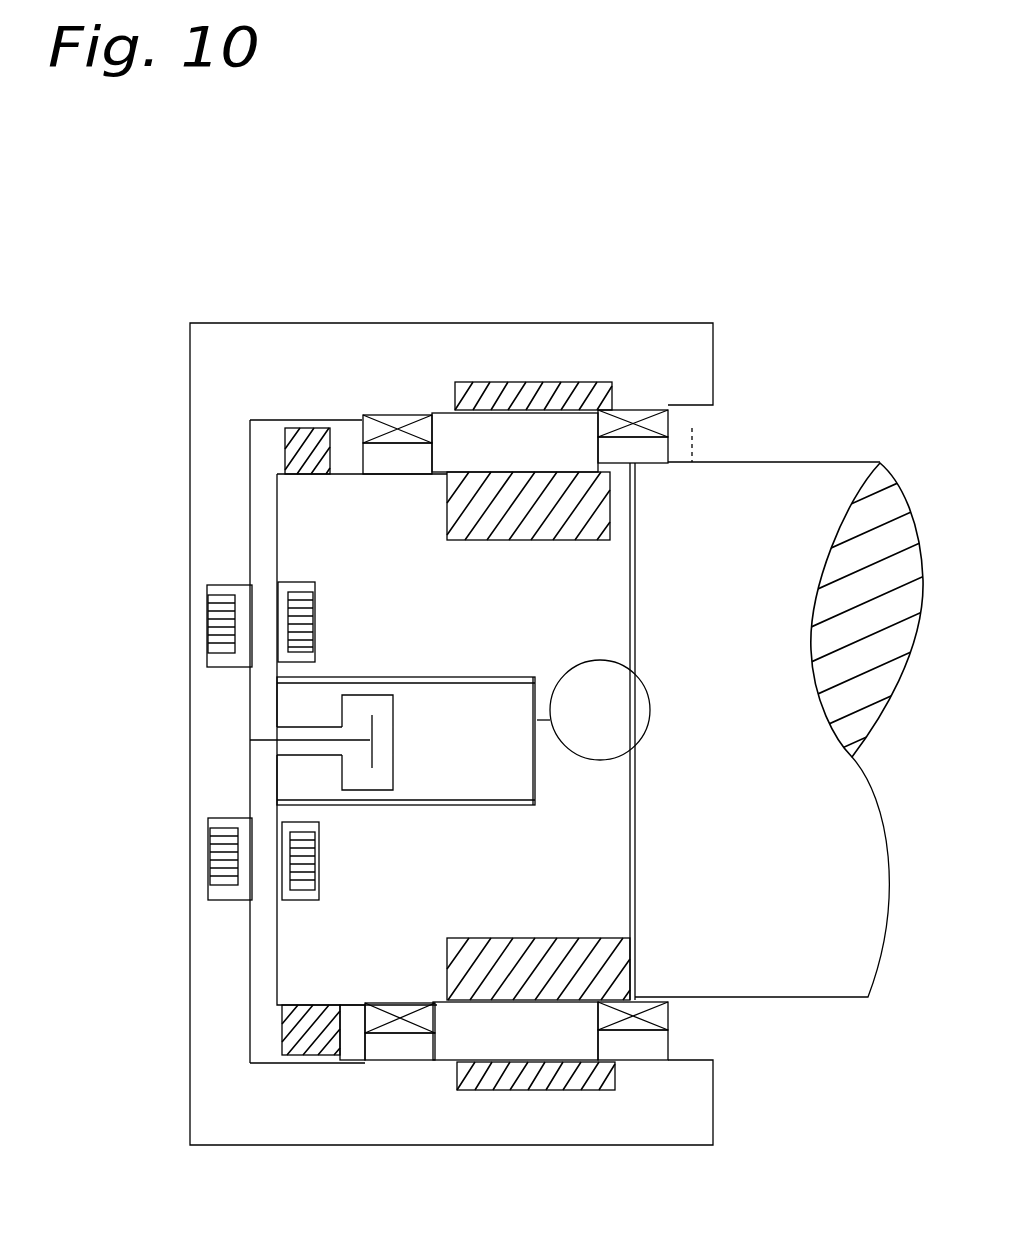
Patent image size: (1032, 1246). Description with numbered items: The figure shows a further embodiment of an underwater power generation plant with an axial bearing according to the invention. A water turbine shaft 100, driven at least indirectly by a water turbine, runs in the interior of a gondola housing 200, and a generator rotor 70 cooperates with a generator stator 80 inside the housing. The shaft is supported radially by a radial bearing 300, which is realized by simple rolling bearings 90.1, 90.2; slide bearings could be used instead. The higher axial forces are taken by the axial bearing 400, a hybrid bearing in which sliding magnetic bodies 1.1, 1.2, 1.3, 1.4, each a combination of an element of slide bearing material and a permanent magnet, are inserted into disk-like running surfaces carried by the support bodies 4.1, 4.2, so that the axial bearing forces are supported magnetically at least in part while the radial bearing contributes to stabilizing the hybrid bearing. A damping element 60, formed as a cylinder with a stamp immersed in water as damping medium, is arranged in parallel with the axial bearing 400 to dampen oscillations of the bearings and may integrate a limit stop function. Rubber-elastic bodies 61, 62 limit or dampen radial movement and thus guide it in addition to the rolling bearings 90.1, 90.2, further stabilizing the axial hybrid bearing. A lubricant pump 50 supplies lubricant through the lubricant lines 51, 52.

The gondola housing 200 is at (660, 345).
The water turbine shaft 100 is at (780, 468).
The generator rotor 70 is at (612, 393).
The radial bearing 300 is at (560, 454).
The generator stator 80 is at (612, 510).
The rolling bearing 90.1 is at (403, 443).
The rolling bearing 90.2 is at (645, 440).
The rubber-elastic body 61 is at (327, 420).
The rubber-elastic body 62 is at (343, 1057).
The lubricant line 51 is at (635, 637).
The lubricant line 52 is at (463, 805).
The lubricant pump 50 is at (640, 745).
The damping element 60 is at (393, 743).
The axial bearing 400 is at (236, 720).
The support body 4.1 is at (302, 600).
The support body 4.2 is at (250, 557).
The sliding magnetic body 1.1 is at (318, 618).
The sliding magnetic body 1.2 is at (207, 665).
The sliding magnetic body 1.3 is at (320, 903).
The sliding magnetic body 1.4 is at (208, 900).